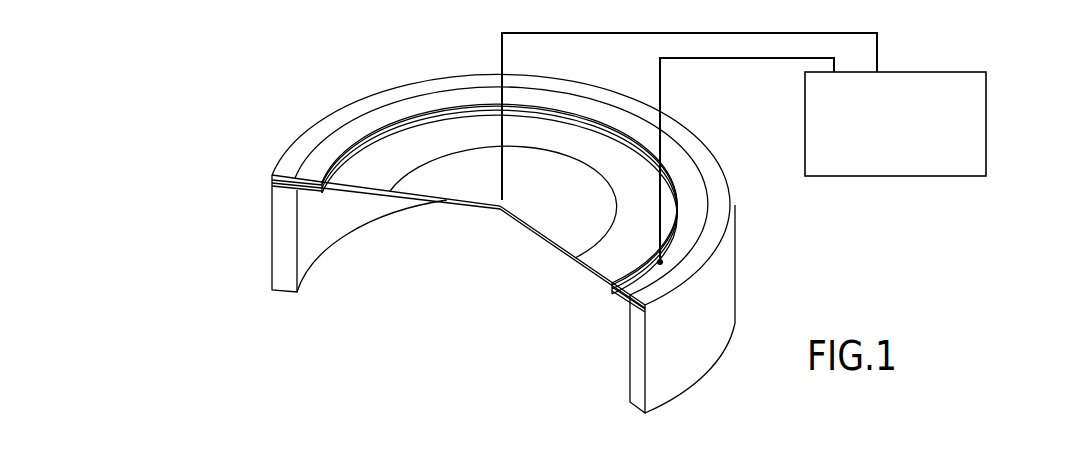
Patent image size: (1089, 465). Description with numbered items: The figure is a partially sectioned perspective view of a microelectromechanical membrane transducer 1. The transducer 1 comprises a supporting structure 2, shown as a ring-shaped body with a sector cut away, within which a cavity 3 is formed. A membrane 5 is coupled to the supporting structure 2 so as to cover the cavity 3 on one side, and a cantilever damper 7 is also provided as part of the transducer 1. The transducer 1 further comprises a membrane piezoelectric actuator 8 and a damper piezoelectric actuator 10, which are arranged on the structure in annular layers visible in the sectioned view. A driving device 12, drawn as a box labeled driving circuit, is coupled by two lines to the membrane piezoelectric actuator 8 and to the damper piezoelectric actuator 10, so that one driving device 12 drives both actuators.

The microelectromechanical membrane transducer 1 is at (188, 158).
The supporting structure 2 is at (296, 292).
The cavity 3 is at (442, 274).
The membrane 5 is at (594, 264).
The cantilever damper 7 is at (356, 75).
The membrane piezoelectric actuator 8 is at (522, 206).
The damper piezoelectric actuator 10 is at (317, 157).
The driving device 12 is at (903, 173).